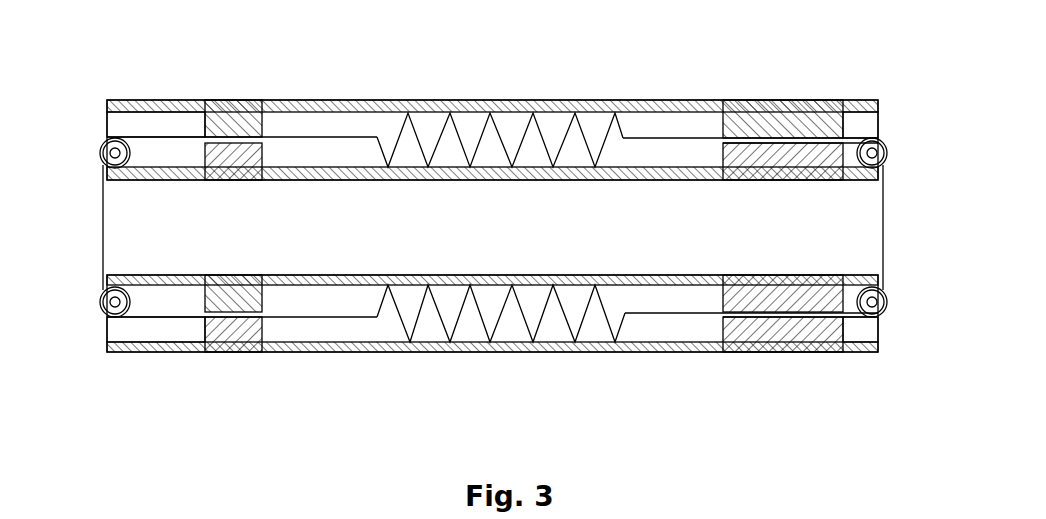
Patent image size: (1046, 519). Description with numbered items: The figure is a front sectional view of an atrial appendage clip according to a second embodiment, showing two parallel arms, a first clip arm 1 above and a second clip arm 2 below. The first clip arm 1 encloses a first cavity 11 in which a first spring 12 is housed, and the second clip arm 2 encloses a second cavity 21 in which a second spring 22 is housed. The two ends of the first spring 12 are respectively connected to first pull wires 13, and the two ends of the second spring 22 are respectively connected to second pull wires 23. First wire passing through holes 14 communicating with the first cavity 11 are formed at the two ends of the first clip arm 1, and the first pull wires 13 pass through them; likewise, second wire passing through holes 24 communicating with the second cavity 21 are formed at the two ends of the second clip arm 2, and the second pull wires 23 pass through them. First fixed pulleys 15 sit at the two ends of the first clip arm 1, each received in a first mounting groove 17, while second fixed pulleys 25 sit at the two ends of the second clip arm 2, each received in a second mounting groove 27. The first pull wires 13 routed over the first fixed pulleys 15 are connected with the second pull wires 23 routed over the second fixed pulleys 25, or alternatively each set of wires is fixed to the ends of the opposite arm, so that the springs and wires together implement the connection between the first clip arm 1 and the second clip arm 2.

The first clip arm 1 is at (492, 97).
The first cavity 11 is at (492, 97).
The first spring 12 is at (503, 90).
The first pull wire 13 is at (492, 78).
The first wire passing through hole 14 is at (504, 97).
The first fixed pulley 15 is at (494, 184).
The first mounting groove 17 is at (506, 76).
The second clip arm 2 is at (492, 349).
The second cavity 21 is at (492, 349).
The second spring 22 is at (501, 354).
The second pull wire 23 is at (492, 368).
The second wire passing through hole 24 is at (489, 349).
The second fixed pulley 25 is at (502, 324).
The second mounting groove 27 is at (509, 370).